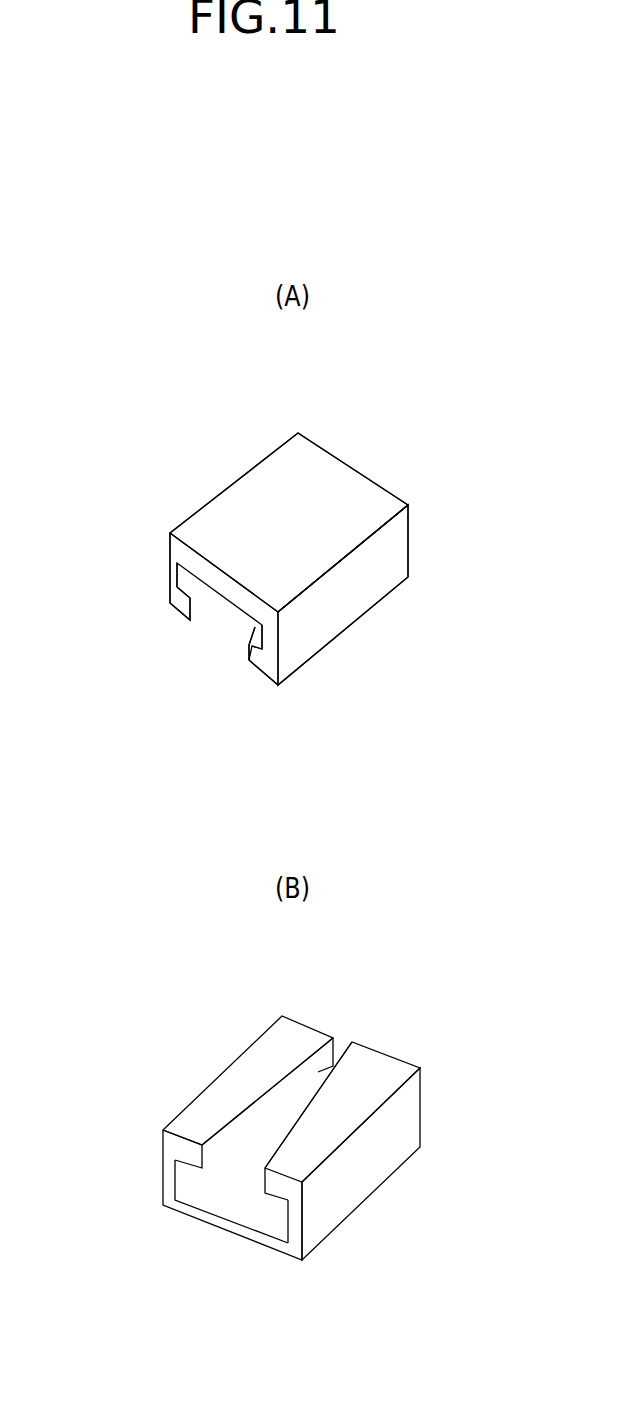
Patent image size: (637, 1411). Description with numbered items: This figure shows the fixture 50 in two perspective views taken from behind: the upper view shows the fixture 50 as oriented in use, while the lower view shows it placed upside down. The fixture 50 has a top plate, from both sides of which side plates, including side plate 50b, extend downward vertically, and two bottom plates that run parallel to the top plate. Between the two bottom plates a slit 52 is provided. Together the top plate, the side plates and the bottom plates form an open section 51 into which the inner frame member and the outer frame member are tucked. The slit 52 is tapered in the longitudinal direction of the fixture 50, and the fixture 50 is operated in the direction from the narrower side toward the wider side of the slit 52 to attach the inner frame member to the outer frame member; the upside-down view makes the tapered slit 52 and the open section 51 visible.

The fixture 50 is at (260, 490).
The side plate 50b is at (348, 605).
The open section 51 is at (229, 1209).
The slit 52 is at (230, 1186).